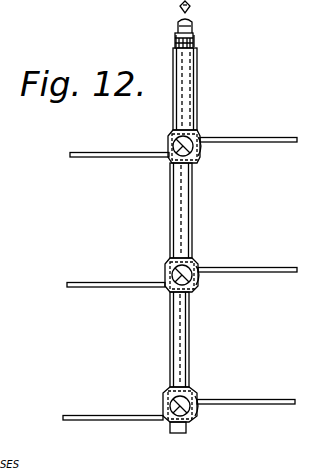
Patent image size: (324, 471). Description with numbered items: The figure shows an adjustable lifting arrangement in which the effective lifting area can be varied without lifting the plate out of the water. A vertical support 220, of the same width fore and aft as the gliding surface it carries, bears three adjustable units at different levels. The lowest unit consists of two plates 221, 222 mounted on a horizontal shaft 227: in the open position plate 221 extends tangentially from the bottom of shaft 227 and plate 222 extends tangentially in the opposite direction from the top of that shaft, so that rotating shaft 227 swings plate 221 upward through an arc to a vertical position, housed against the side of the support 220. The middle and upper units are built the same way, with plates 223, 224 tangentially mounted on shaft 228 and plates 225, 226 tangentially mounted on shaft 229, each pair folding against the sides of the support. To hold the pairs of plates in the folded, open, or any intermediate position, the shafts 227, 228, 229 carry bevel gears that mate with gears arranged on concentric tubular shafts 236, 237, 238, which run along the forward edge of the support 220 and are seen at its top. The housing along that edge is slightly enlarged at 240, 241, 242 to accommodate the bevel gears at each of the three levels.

The support 220 is at (185, 89).
The plate 221 is at (95, 410).
The plate 222 is at (246, 404).
The plate 223 is at (81, 287).
The plate 224 is at (253, 272).
The plate 225 is at (83, 157).
The plate 226 is at (253, 142).
The shaft 227 is at (190, 420).
The shaft 228 is at (190, 288).
The shaft 229 is at (192, 158).
The concentric tubular shaft 236 is at (178, 26).
The concentric tubular shaft 237 is at (194, 34).
The concentric tubular shaft 238 is at (175, 43).
The housing enlargement 240 is at (199, 394).
The housing enlargement 241 is at (198, 263).
The housing enlargement 242 is at (200, 133).